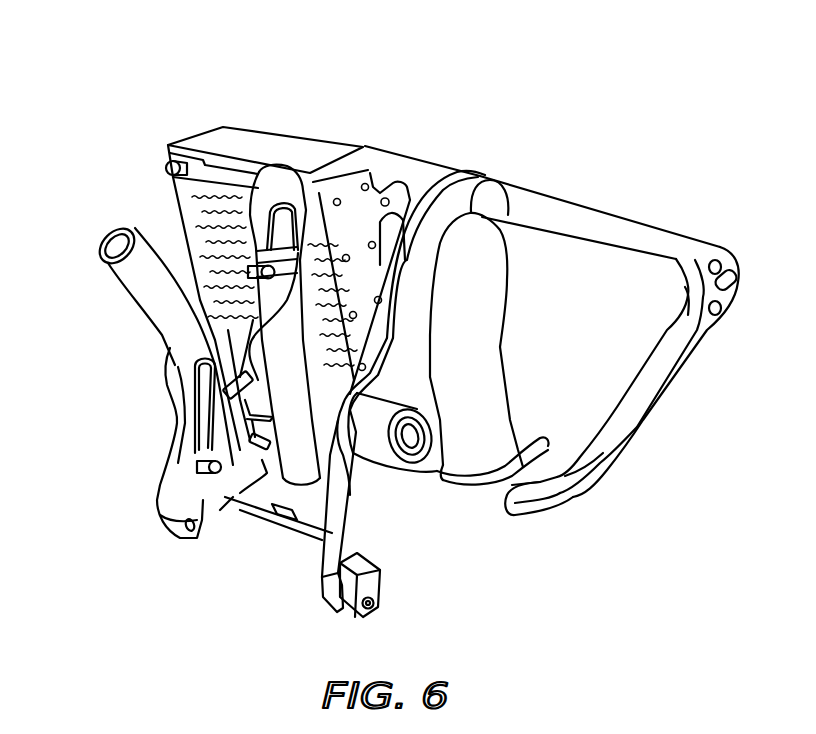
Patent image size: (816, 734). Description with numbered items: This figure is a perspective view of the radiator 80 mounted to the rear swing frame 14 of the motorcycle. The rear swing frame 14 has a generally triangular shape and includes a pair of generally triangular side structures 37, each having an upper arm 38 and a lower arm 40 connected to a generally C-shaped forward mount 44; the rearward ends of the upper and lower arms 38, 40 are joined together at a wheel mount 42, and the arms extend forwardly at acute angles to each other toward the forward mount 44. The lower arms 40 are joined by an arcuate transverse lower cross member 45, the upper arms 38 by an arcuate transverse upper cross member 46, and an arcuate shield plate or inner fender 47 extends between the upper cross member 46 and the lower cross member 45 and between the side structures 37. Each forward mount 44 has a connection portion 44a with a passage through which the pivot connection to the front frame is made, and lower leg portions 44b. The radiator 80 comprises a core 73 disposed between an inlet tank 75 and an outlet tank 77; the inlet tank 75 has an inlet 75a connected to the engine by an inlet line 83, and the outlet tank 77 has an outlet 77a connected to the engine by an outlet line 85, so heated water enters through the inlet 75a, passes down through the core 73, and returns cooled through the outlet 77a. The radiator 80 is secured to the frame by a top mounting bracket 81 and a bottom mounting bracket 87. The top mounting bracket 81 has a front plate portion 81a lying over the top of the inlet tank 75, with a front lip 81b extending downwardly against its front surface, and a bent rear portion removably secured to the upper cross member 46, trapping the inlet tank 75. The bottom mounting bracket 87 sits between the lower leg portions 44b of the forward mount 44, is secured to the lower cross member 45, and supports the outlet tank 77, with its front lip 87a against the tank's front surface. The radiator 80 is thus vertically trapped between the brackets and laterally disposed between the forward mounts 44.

The rear swing frame 14 is at (660, 210).
The side structure 37 is at (574, 512).
The upper arm 38 is at (573, 207).
The lower arm 40 is at (630, 425).
The wheel mount 42 is at (723, 257).
The forward mount 44 is at (438, 287).
The connection portion 44a is at (168, 368).
The lower leg portion 44b is at (166, 482).
The lower cross member 45 is at (400, 528).
The upper cross member 46 is at (393, 165).
The inner fender 47 is at (500, 362).
The core 73 is at (212, 263).
The inlet tank 75 is at (363, 163).
The inlet 75a is at (282, 183).
The outlet tank 77 is at (320, 527).
The outlet 77a is at (232, 497).
The radiator 80 is at (160, 226).
The top mounting bracket 81 is at (218, 110).
The front plate portion 81a is at (222, 163).
The front lip 81b is at (216, 143).
The inlet line 83 is at (338, 424).
The outlet line 85 is at (175, 308).
The bottom mounting bracket 87 is at (305, 543).
The front lip 87a is at (297, 513).